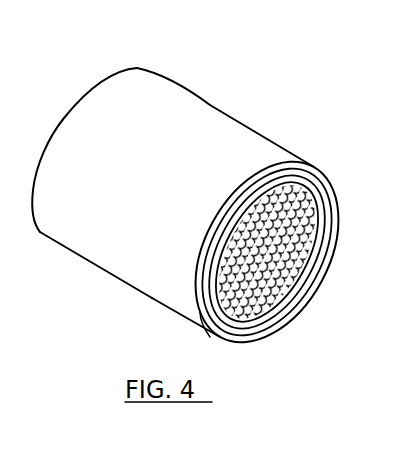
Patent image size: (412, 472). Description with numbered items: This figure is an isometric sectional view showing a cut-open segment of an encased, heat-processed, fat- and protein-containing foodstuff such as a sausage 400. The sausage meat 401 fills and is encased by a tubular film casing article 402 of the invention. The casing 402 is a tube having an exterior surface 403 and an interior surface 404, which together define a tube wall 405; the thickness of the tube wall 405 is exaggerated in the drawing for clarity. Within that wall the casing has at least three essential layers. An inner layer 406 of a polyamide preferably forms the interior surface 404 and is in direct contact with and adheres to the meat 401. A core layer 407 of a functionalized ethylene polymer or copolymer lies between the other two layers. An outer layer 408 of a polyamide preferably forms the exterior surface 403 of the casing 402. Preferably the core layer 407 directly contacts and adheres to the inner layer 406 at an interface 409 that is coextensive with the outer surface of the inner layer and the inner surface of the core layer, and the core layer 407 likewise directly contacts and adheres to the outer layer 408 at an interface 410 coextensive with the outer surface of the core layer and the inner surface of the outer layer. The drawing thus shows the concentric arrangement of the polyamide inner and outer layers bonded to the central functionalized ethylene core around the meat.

The sausage 400 is at (256, 116).
The sausage meat 401 is at (272, 298).
The tubular film casing article 402 is at (152, 300).
The exterior surface 403 is at (112, 228).
The interior surface 404 is at (201, 312).
The tube wall 405 is at (119, 261).
The inner layer 406 is at (302, 295).
The core layer 407 is at (317, 258).
The outer layer 408 is at (335, 218).
The interface 409 is at (321, 192).
The interface 410 is at (311, 169).